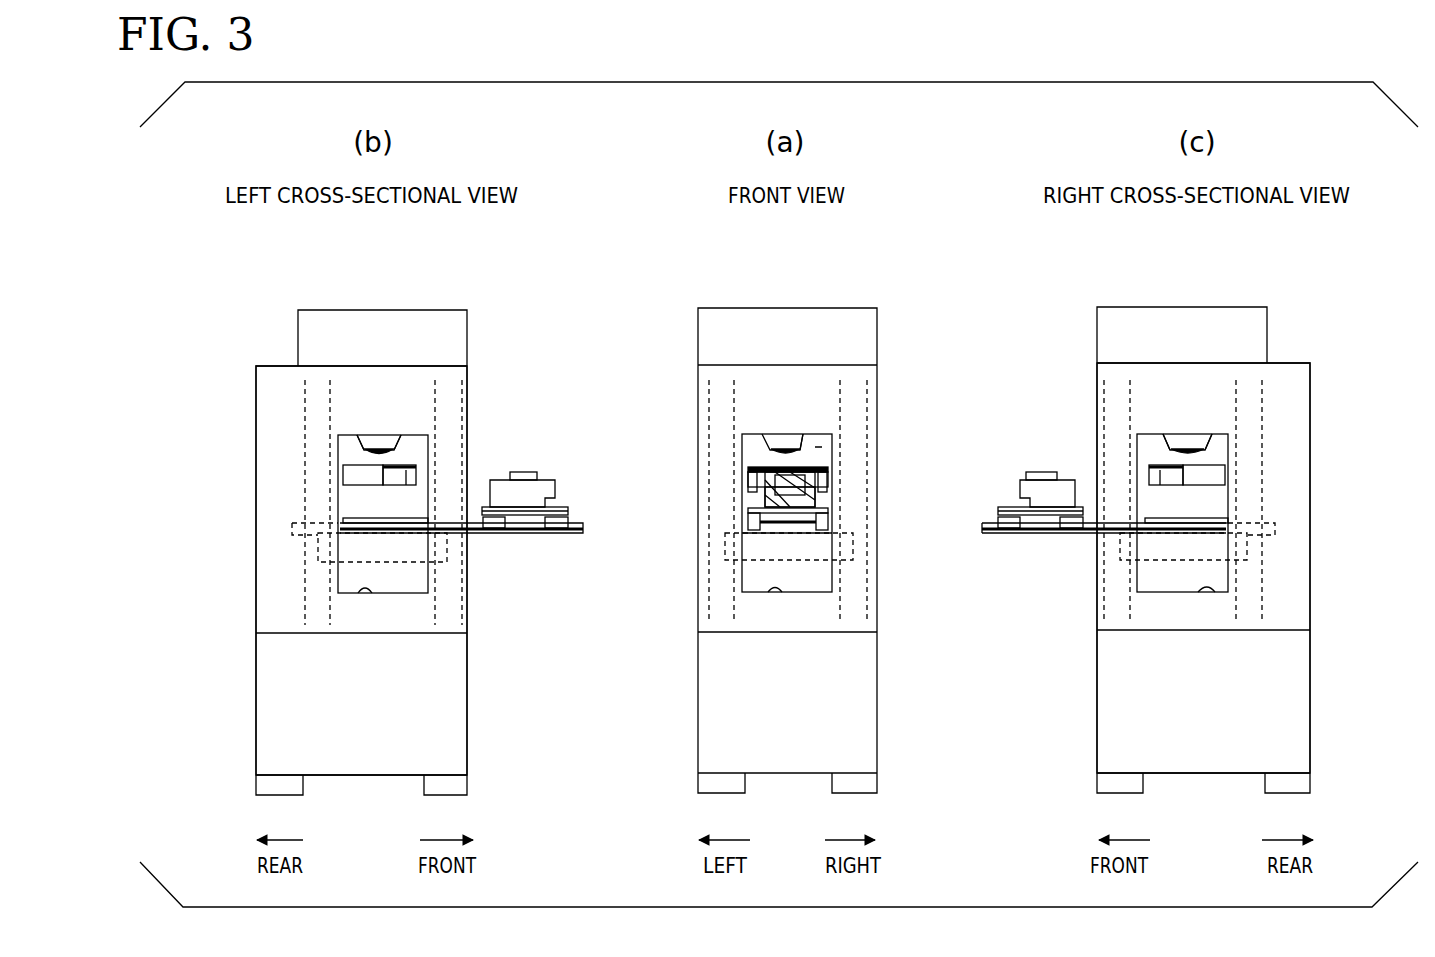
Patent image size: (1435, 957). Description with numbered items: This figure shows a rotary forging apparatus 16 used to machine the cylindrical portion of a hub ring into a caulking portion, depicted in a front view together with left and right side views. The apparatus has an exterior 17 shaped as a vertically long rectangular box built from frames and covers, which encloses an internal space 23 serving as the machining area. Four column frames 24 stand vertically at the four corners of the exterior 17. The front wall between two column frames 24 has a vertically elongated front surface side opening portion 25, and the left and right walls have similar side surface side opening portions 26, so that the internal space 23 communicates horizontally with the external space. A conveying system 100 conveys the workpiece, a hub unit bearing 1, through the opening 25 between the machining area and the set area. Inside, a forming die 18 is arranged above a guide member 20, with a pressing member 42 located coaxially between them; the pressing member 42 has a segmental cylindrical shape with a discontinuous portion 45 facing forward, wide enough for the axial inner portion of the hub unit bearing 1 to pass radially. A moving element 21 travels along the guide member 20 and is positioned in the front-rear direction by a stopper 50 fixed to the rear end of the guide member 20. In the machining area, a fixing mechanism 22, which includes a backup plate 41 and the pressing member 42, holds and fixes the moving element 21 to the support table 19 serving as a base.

The hub unit bearing 1 is at (525, 478).
The rotary forging apparatus 16 is at (247, 392).
The exterior 17 is at (290, 585).
The forming die 18 is at (383, 447).
The support table 19 is at (413, 548).
The guide member 20 is at (517, 537).
The moving element 21 is at (533, 493).
The fixing mechanism 22 is at (362, 447).
The internal space 23 is at (430, 445).
The column frames 24 is at (305, 485).
The front surface side opening portion 25 is at (763, 586).
The side surface side opening portions 26 is at (368, 592).
The backup plate 41 is at (362, 518).
The pressing member 42 is at (345, 470).
The discontinuous portion 45 is at (425, 478).
The stopper 50 is at (320, 523).
The conveying system 100 is at (545, 630).